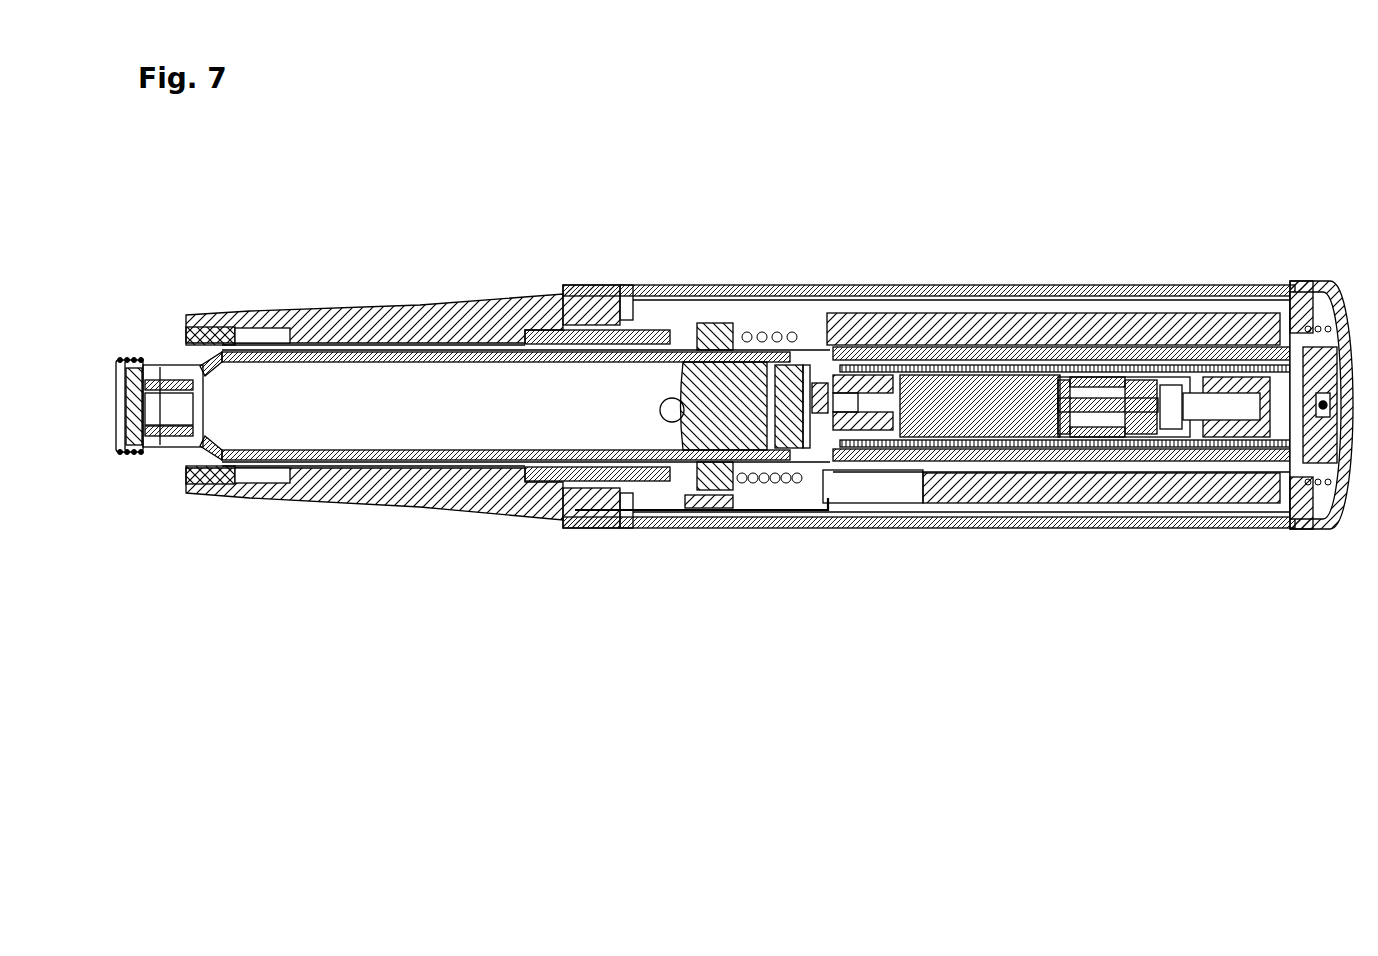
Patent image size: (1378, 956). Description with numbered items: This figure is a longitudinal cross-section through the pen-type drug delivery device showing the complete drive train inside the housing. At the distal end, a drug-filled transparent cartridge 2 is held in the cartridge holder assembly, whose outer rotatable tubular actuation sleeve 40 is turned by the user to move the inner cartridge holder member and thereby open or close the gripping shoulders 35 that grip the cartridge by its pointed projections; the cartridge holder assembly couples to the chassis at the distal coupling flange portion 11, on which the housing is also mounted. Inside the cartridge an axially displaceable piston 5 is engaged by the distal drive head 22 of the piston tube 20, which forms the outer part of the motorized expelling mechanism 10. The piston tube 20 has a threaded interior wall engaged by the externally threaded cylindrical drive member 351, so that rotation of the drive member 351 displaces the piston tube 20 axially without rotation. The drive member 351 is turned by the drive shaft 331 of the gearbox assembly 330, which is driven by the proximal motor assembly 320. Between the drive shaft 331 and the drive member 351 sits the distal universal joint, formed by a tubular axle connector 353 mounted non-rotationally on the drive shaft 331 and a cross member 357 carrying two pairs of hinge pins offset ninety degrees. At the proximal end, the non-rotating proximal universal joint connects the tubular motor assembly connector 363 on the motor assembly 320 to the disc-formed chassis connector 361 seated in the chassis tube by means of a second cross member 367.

The cartridge 2 is at (437, 433).
The piston 5 is at (723, 438).
The motorized expelling mechanism 10 is at (1012, 346).
The distal coupling flange portion 11 is at (601, 296).
The piston tube 20 is at (907, 378).
The distal drive head 22 is at (795, 390).
The gripping shoulders 35 is at (208, 478).
The actuation sleeve 40 is at (399, 290).
The motor assembly 320 is at (1099, 421).
The gearbox assembly 330 is at (1003, 418).
The drive shaft 331 is at (887, 419).
The drive member 351 is at (838, 371).
The axle connector 353 is at (855, 418).
The cross member 357 is at (822, 413).
The chassis connector 361 is at (1318, 381).
The motor assembly connector 363 is at (1250, 430).
The cross member 367 is at (1295, 421).